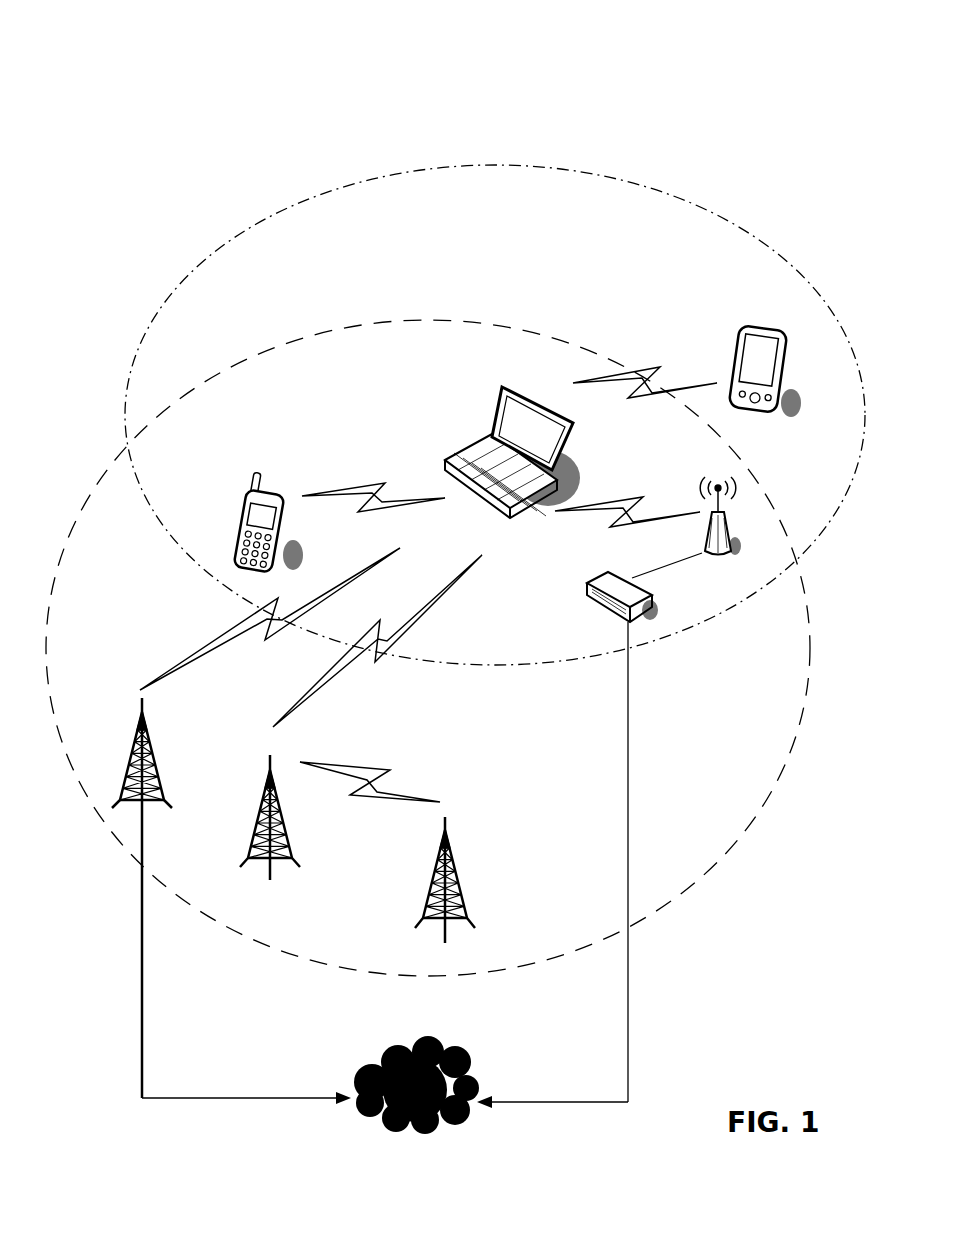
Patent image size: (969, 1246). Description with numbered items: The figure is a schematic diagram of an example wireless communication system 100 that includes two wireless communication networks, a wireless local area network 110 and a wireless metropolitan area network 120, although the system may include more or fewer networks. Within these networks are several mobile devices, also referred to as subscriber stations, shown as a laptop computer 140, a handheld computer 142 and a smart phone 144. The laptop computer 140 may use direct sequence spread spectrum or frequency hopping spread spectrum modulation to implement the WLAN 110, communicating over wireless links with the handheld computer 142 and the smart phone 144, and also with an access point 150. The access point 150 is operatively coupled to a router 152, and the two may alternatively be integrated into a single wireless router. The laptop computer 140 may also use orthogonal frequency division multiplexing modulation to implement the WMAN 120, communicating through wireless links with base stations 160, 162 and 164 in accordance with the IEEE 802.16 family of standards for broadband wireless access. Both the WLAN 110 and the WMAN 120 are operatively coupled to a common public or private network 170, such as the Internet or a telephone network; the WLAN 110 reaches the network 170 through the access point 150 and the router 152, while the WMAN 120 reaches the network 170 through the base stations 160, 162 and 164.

The wireless communication system 100 is at (104, 113).
The wireless local area network 110 is at (372, 178).
The wireless metropolitan area network 120 is at (742, 835).
The laptop computer 140 is at (506, 383).
The handheld computer 142 is at (735, 325).
The smart phone 144 is at (263, 493).
The access point 150 is at (730, 537).
The router 152 is at (587, 603).
The base station 160 is at (150, 758).
The base station 162 is at (295, 843).
The base station 164 is at (463, 882).
The common public or private network 170 is at (365, 1070).